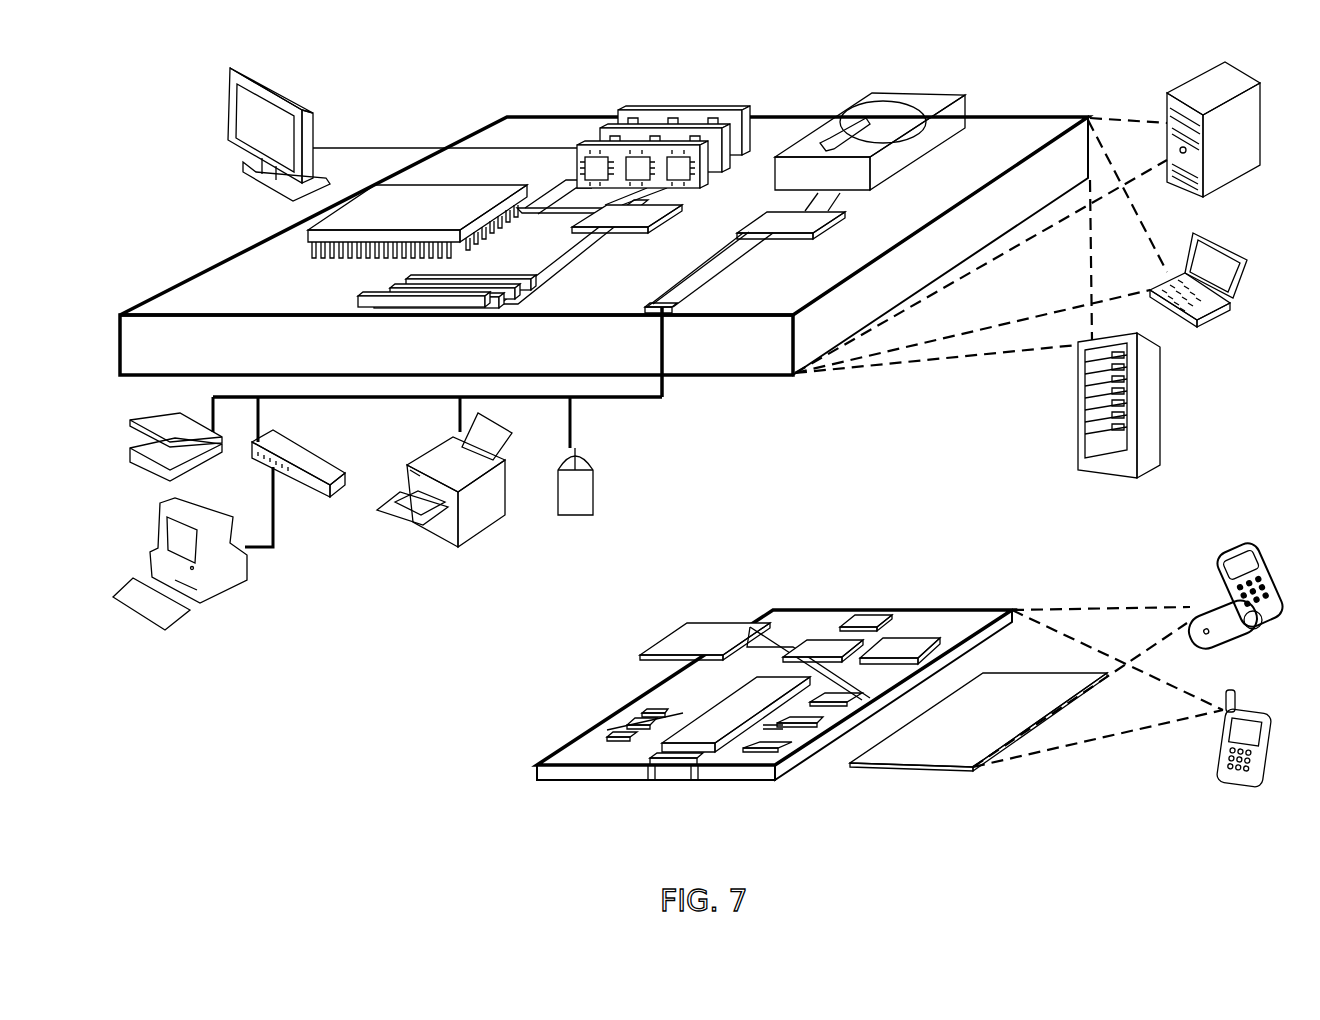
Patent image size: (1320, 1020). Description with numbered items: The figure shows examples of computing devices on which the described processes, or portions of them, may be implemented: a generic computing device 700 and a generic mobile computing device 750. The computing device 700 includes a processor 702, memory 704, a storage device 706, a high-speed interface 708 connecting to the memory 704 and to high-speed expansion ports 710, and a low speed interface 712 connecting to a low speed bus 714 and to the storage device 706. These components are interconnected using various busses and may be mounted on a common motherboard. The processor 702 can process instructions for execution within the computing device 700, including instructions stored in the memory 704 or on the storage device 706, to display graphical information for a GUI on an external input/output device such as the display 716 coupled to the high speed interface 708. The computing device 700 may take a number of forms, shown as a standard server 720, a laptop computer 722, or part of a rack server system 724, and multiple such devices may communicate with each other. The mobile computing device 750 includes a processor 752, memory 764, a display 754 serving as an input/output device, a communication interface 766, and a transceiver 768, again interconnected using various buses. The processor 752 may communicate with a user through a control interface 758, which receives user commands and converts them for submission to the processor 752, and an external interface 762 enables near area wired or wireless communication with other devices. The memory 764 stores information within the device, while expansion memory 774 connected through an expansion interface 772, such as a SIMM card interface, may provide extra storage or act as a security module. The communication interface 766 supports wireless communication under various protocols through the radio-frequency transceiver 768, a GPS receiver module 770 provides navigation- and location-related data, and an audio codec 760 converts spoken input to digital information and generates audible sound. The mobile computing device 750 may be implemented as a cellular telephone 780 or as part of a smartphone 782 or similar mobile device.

The computing device 700 is at (431, 90).
The processor 702 is at (308, 238).
The memory 704 is at (626, 110).
The storage device 706 is at (859, 96).
The high-speed interface 708 is at (598, 217).
The high-speed expansion ports 710 is at (392, 282).
The low speed interface 712 is at (790, 224).
The low speed bus 714 is at (672, 318).
The display 716 is at (228, 72).
The standard server 720 is at (1165, 104).
The laptop computer 722 is at (1193, 234).
The rack server system 724 is at (1078, 429).
The mobile computing device 750 is at (754, 588).
The processor 752 is at (713, 747).
The display 754 is at (975, 769).
The control interface 758 is at (822, 720).
The audio codec 760 is at (832, 703).
The external interface 762 is at (673, 762).
The memory 764 is at (621, 729).
The communication interface 766 is at (823, 648).
The transceiver 768 is at (903, 647).
The GPS receiver module 770 is at (864, 613).
The expansion interface 772 is at (748, 620).
The expansion memory 774 is at (687, 624).
The cellular telephone 780 is at (1240, 550).
The smartphone 782 is at (1228, 688).